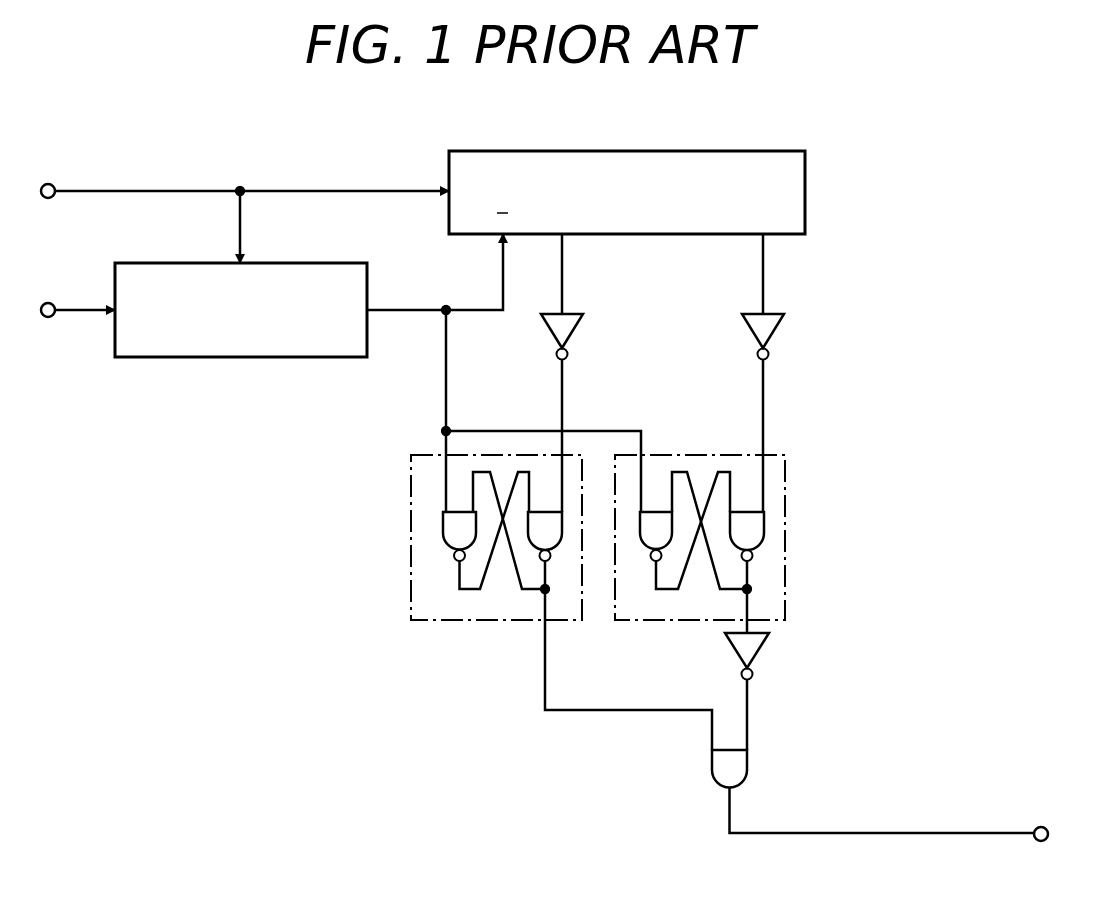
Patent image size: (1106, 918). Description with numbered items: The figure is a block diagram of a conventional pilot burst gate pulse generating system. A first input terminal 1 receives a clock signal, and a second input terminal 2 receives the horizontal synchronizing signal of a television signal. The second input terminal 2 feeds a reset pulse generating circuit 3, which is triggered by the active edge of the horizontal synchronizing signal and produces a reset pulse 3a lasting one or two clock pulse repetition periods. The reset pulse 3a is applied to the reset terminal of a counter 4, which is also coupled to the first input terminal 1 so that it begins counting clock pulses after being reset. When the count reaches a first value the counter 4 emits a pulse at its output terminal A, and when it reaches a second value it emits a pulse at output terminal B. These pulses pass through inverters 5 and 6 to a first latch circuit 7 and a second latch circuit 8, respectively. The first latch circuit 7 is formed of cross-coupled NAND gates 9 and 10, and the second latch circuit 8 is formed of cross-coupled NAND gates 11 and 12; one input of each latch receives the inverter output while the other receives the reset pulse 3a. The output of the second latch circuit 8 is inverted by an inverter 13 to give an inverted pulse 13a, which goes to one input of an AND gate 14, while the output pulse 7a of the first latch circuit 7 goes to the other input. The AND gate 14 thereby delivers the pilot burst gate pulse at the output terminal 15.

The first input terminal 1 is at (48, 184).
The second input terminal 2 is at (48, 303).
The reset pulse generating circuit 3 is at (318, 263).
The reset pulse 3a is at (430, 309).
The counter 4 is at (775, 151).
The inverter 5 is at (578, 332).
The inverter 6 is at (780, 332).
The first latch circuit 7 is at (411, 455).
The output pulse of the first latch circuit 7a is at (585, 710).
The second latch circuit 8 is at (785, 455).
The NAND gate 9 is at (443, 525).
The NAND gate 10 is at (562, 525).
The NAND gate 11 is at (640, 530).
The NAND gate 12 is at (766, 525).
The inverter 13 is at (758, 653).
The inverted pulse 13a is at (750, 706).
The AND gate 14 is at (748, 770).
The output terminal 15 is at (1047, 829).